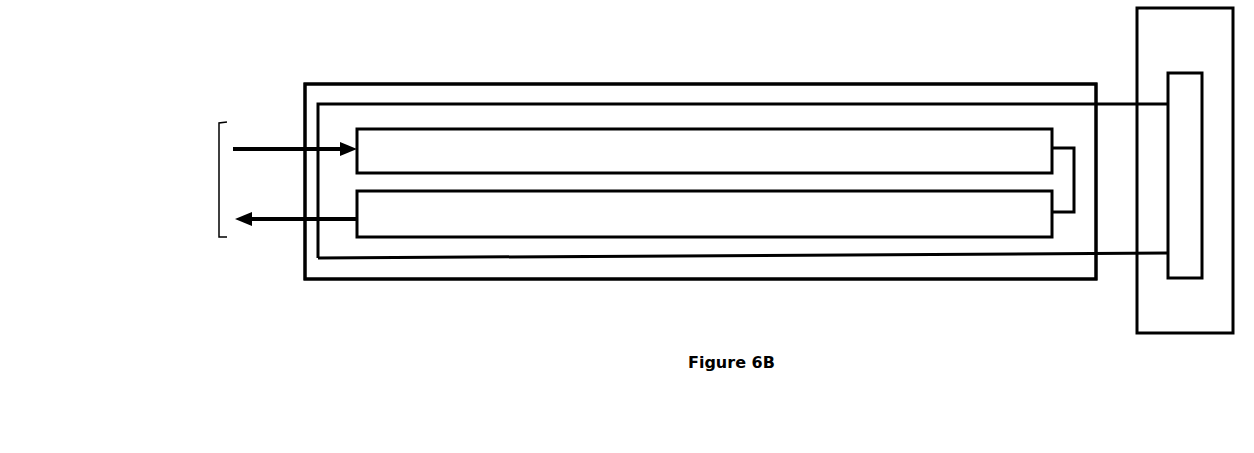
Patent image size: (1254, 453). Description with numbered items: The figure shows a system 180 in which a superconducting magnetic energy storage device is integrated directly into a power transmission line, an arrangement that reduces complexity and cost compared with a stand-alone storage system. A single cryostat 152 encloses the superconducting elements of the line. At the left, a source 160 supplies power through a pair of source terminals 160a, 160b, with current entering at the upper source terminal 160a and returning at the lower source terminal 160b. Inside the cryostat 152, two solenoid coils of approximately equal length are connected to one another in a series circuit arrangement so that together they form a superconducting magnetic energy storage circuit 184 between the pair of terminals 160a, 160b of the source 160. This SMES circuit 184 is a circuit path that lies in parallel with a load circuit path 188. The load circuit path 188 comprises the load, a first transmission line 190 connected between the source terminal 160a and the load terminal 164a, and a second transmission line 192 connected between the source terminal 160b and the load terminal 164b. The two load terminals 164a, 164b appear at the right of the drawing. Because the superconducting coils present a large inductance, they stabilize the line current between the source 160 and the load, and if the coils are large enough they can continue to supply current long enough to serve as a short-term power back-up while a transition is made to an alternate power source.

The system 180 is at (331, 26).
The cryostat 152 is at (700, 209).
The load circuit path 188 is at (743, 144).
The second transmission line 192 is at (743, 293).
The first transmission line 190 is at (715, 120).
The superconducting magnetic energy storage (SMES) circuit 184 is at (694, 258).
The load terminal 164a is at (1126, 144).
The load terminal 164b is at (1143, 171).
The source 160 is at (218, 180).
The source terminal 160a is at (295, 114).
The source terminal 160b is at (291, 254).